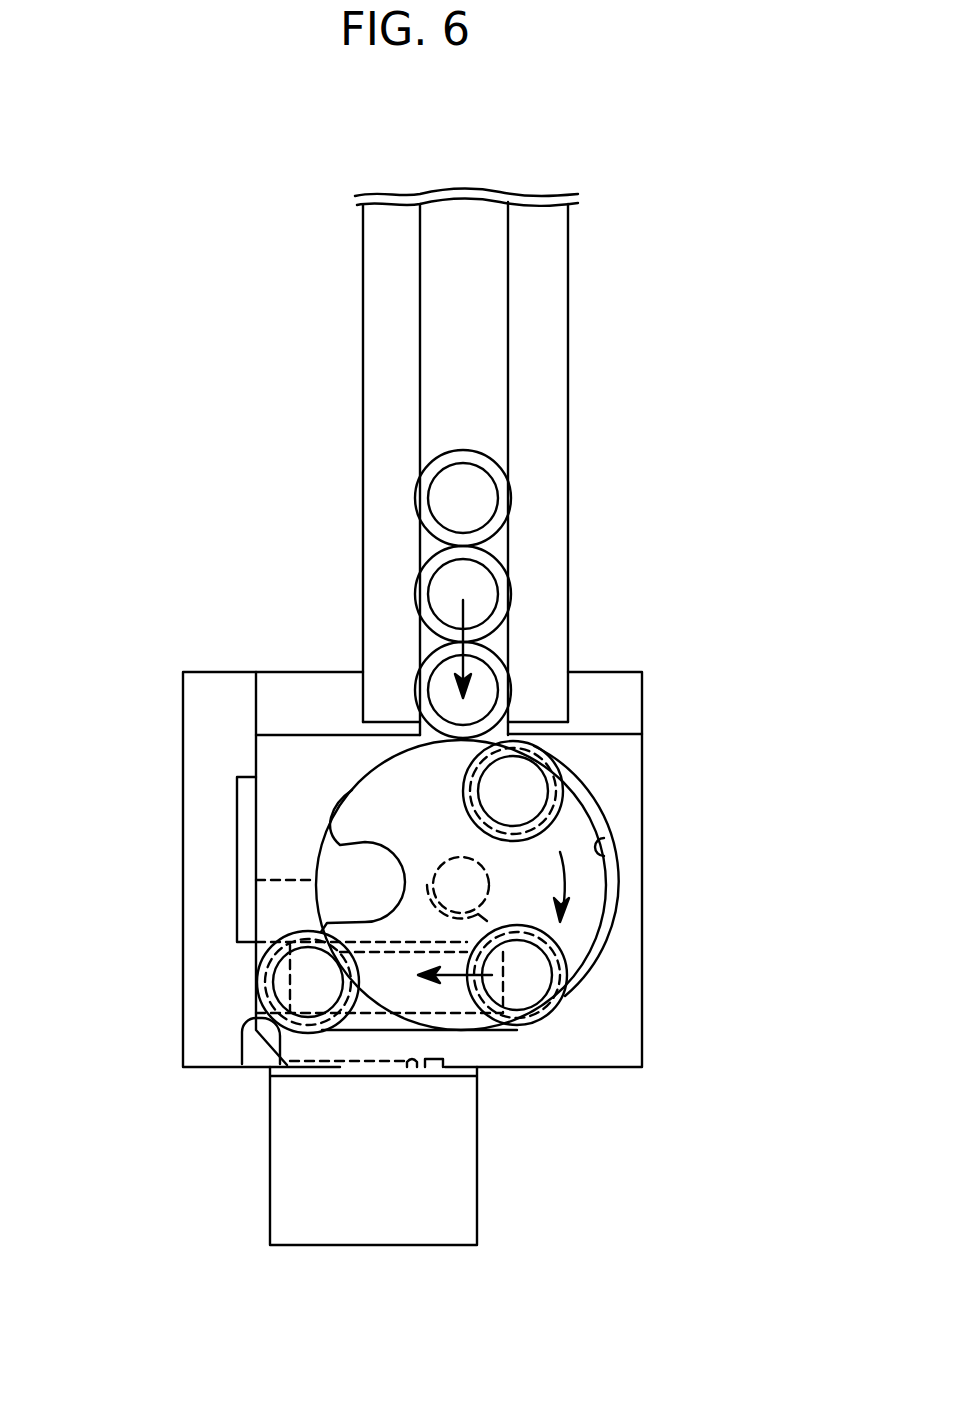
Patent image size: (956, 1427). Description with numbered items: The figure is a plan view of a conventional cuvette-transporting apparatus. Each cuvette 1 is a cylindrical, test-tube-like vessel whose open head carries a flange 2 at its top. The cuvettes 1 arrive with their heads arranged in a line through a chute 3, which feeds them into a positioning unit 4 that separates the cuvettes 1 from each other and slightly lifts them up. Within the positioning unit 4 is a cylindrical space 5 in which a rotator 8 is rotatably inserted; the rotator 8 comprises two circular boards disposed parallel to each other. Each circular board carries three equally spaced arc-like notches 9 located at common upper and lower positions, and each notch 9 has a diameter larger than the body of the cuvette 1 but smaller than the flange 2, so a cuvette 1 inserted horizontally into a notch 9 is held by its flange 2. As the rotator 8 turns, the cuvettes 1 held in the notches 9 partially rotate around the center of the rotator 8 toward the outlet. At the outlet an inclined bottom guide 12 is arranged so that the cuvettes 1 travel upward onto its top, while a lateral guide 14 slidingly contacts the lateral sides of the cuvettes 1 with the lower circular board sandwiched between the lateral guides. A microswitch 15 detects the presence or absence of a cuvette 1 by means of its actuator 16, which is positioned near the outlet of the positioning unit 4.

The cuvette 1 is at (482, 668).
The flange 2 is at (508, 678).
The chute 3 is at (556, 354).
The positioning unit 4 is at (623, 1050).
The cylindrical space 5 is at (602, 860).
The rotator 8 is at (368, 808).
The arc-like notch 9 is at (512, 826).
The bottom guide 12 is at (435, 993).
The lateral guide 14 is at (428, 893).
The microswitch 15 is at (410, 1225).
The actuator 16 is at (250, 1043).